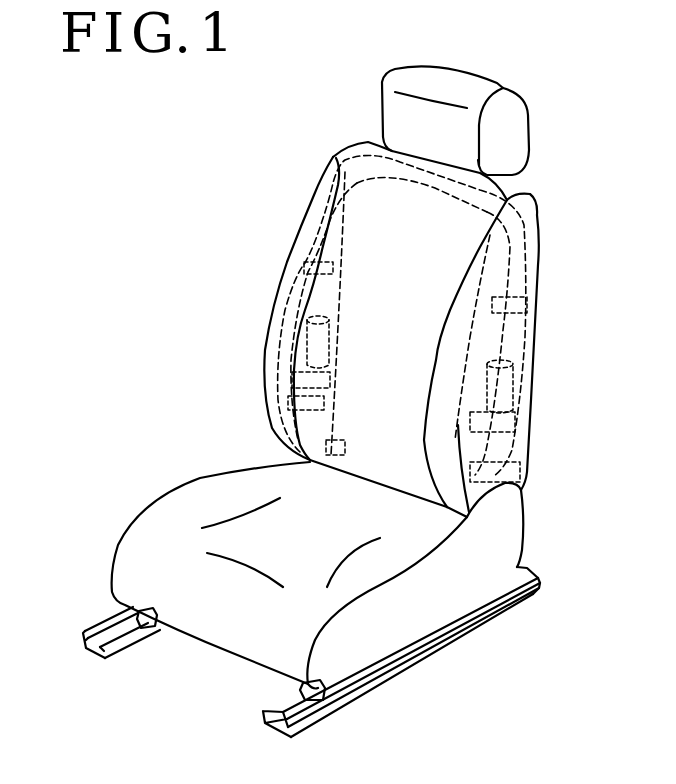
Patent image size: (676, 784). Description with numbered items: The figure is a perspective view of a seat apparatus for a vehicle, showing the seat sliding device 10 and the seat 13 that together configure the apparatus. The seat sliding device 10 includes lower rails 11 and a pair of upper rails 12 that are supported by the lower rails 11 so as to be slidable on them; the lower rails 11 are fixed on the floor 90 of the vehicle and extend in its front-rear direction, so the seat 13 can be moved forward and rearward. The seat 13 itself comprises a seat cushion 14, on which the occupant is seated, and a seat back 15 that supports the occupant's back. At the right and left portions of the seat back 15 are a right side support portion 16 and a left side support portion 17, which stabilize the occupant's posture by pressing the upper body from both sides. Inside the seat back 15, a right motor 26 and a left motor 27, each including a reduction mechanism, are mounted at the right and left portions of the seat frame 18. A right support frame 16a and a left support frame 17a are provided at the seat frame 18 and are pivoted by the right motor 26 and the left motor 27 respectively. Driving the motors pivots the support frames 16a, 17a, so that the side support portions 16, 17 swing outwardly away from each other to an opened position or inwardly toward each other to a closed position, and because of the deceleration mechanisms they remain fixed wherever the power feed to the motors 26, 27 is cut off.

The seat sliding device 10 is at (115, 671).
The lower rails 11 is at (83, 640).
The upper rails 12 is at (150, 625).
The seat 13 is at (125, 350).
The seat cushion 14 is at (213, 510).
The seat back 15 is at (378, 228).
The right side support portion 16 is at (270, 303).
The right support frame 16a is at (290, 400).
The left side support portion 17 is at (443, 357).
The left support frame 17a is at (458, 444).
The seat frame 18 is at (517, 242).
The right motor 26 is at (302, 338).
The left motor 27 is at (503, 393).
The floor 90 is at (489, 702).